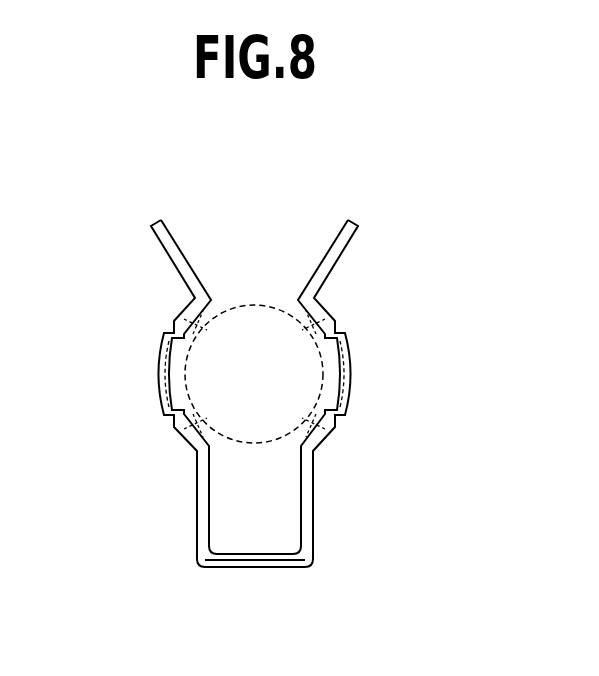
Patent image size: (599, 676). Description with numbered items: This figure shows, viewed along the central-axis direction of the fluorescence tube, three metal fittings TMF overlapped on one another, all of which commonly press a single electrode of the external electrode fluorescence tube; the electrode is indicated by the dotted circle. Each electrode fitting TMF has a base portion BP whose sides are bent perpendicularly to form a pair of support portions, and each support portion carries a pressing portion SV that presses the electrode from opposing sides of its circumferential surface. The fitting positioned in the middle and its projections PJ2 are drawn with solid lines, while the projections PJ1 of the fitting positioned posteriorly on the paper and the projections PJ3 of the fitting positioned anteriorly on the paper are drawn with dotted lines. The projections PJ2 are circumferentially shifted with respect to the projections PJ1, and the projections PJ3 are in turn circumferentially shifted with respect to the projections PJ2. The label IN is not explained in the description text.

The intermediate (connecting) member / clip IN is at (178, 253).
The electrode fitting TMF is at (271, 252).
The pressing portion SV is at (160, 378).
The projections of the posteriorly positioned metal fitting PJ1 is at (192, 306).
The projections of the middle metal fitting PJ2 is at (173, 328).
The projections of the anteriorly positioned metal fitting PJ3 is at (170, 358).
The base portion BP is at (256, 561).